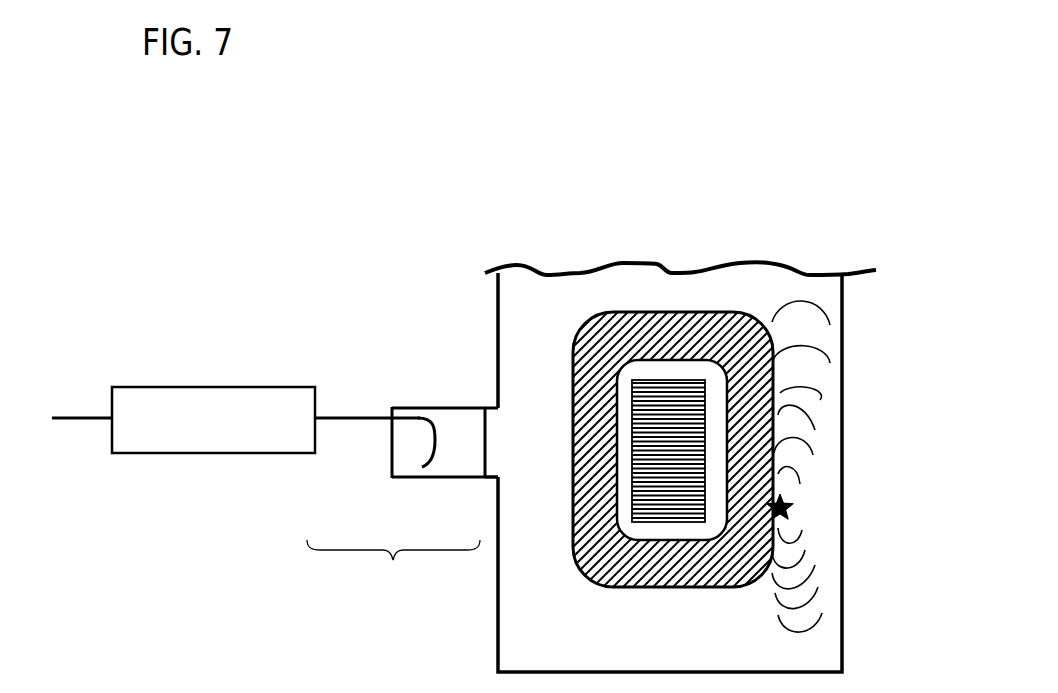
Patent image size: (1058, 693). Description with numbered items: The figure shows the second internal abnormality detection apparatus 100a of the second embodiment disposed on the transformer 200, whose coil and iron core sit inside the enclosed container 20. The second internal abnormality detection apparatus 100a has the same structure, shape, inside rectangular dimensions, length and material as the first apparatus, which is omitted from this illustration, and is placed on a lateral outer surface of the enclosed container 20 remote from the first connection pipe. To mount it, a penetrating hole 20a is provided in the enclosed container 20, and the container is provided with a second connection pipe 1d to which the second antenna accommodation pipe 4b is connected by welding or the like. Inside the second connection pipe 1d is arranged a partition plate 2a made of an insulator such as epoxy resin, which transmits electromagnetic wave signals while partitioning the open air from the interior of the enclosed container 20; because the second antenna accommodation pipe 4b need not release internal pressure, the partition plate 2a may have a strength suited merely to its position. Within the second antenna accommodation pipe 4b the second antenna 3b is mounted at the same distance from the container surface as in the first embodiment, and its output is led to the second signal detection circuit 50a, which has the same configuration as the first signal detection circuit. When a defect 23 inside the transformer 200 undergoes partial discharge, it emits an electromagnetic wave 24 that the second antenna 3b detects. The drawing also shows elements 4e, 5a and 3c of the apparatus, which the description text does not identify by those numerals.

The transformer 200 is at (760, 227).
The enclosed container 20 is at (842, 607).
The penetrating hole 20a is at (500, 420).
The second antenna accommodation pipe 4b is at (470, 405).
The connector end wall 4e is at (395, 405).
The connector bottom wall 5a is at (390, 455).
The partition plate 2a is at (482, 442).
The second connection pipe 1d is at (493, 478).
The signal line 3c is at (350, 415).
The second antenna 3b is at (420, 460).
The second signal detection circuit 50a is at (230, 386).
The second internal abnormality detection apparatus 100a is at (374, 593).
The defect 23 is at (790, 506).
The electromagnetic wave 24 is at (820, 392).